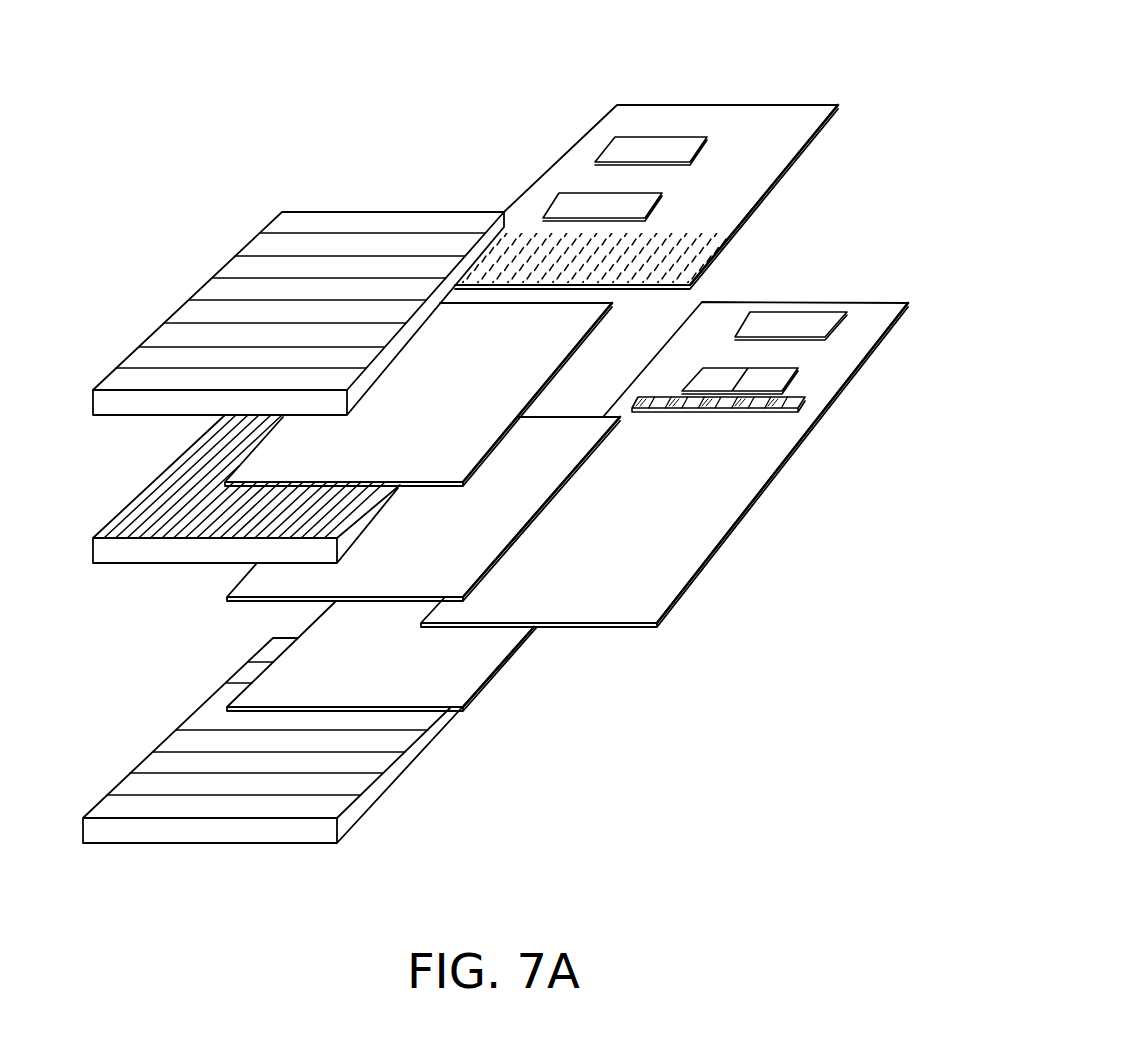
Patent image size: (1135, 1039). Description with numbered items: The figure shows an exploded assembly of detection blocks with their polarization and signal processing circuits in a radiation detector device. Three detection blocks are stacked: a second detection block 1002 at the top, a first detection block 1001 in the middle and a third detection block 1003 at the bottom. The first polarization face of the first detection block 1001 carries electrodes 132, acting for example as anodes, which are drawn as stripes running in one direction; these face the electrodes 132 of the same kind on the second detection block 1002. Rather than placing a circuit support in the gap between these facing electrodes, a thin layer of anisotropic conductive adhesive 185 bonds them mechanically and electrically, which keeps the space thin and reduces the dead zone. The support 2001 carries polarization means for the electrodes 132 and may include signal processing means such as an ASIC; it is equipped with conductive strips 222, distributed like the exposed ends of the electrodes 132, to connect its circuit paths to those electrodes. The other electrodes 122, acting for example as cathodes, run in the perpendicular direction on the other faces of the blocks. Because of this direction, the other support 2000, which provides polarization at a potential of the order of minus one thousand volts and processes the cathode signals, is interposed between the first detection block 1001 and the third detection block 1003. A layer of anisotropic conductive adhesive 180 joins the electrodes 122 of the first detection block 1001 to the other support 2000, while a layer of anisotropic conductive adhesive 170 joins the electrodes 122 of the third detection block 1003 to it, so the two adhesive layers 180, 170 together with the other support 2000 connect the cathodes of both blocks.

The first detection block 1001 is at (275, 524).
The second detection block 1002 is at (188, 404).
The third detection block 1003 is at (193, 829).
The electrodes 122 is at (400, 255).
The electrodes 132 is at (357, 497).
The layer of anisotropic conductive adhesive 170 is at (512, 657).
The layer of anisotropic conductive adhesive 180 is at (263, 600).
The anisotropic conductive adhesive 185 is at (563, 370).
The other support 2000 is at (727, 492).
The support 2001 is at (655, 152).
The conductive strips 222 is at (695, 253).